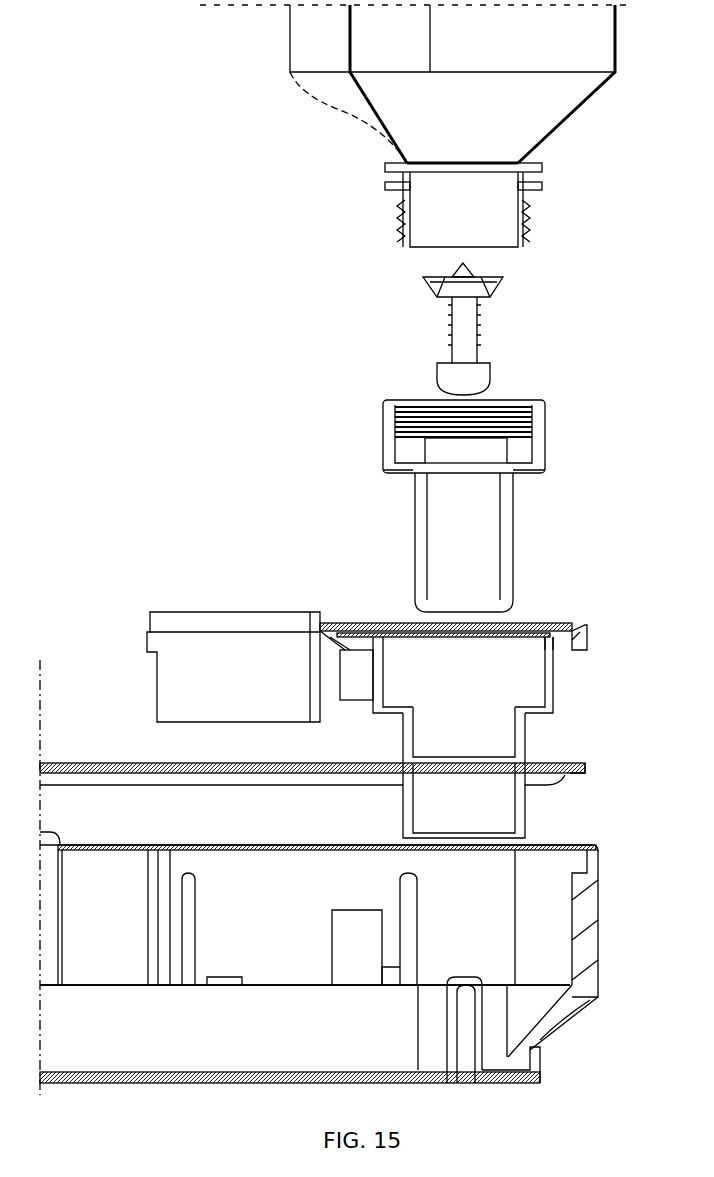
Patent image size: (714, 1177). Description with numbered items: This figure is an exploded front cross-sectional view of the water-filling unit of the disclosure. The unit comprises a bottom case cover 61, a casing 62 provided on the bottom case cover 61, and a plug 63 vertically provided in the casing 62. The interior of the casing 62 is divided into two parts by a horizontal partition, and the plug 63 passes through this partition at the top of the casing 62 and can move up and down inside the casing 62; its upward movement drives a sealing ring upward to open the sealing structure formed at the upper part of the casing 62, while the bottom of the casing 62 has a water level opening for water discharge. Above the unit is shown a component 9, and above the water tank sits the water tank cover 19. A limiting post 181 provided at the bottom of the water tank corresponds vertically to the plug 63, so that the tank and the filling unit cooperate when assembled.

The connector fitting 9 is at (488, 200).
The plug 63 is at (465, 339).
The casing 62 is at (512, 537).
The bottom case cover 61 is at (480, 667).
The water tank cover 19 is at (493, 802).
The limiting post 181 is at (465, 1037).